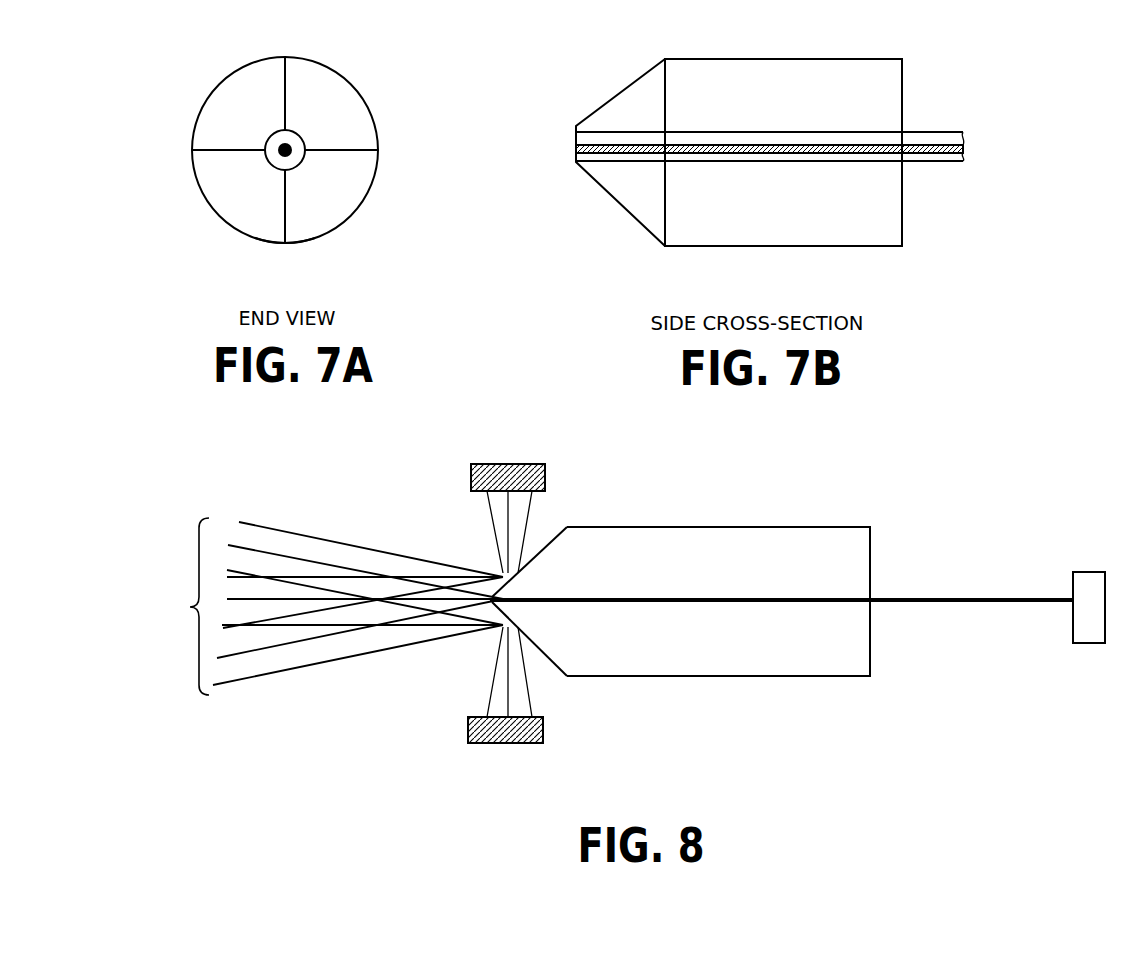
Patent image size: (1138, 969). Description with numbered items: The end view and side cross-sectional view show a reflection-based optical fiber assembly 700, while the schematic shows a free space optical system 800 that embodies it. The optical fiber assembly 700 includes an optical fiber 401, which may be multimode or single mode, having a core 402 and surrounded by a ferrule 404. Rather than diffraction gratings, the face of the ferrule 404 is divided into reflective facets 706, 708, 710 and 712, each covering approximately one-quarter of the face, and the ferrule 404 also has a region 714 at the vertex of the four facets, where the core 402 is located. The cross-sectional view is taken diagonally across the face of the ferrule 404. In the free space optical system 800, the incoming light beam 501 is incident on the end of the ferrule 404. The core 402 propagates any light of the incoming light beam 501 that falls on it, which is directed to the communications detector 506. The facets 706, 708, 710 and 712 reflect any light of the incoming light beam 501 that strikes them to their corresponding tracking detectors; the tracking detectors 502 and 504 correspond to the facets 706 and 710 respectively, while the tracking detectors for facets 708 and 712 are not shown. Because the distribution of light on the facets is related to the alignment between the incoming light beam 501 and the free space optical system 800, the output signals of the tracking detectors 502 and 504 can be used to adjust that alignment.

In FIG. 7A, the optical fiber assembly 700 is at (110, 89).
In FIG. 7B, the optical fiber assembly 700 is at (947, 90).
In FIG. 7A, the reflective facet 706 is at (221, 98).
In FIG. 7B, the reflective facet 706 is at (619, 94).
In FIG. 8, the reflective facet 706 is at (540, 548).
In FIG. 7A, the reflective facet 708 is at (338, 98).
In FIG. 7A, the reflective facet 710 is at (337, 208).
In FIG. 7B, the reflective facet 710 is at (626, 210).
In FIG. 8, the reflective facet 710 is at (543, 664).
In FIG. 7A, the reflective facet 712 is at (220, 208).
In FIG. 7A, the region 714 is at (307, 136).
In FIG. 7A, the ferrule 404 is at (306, 245).
In FIG. 7B, the ferrule 404 is at (756, 247).
In FIG. 8, the ferrule 404 is at (723, 677).
In FIG. 7B, the core 402 is at (960, 153).
In FIG. 8, the core 402 is at (700, 607).
In FIG. 7B, the optical fiber 401 is at (945, 170).
In FIG. 8, the free space optical system 800 is at (902, 451).
In FIG. 8, the incoming light beam 501 is at (326, 606).
In FIG. 8, the tracking detector 502 is at (544, 465).
In FIG. 8, the tracking detector 504 is at (490, 745).
In FIG. 8, the communications detector 506 is at (1077, 644).